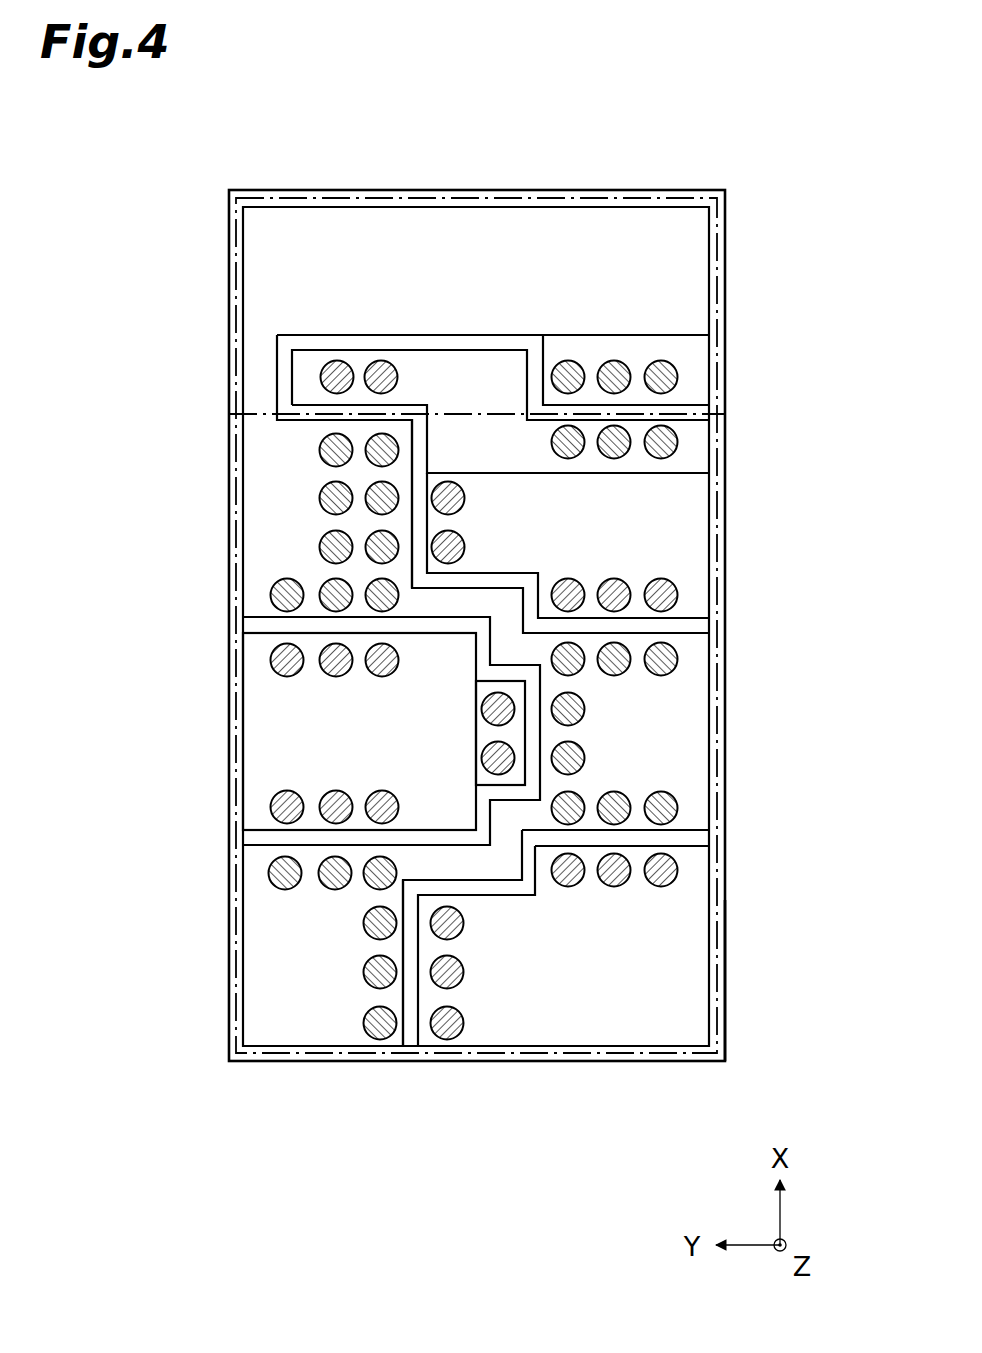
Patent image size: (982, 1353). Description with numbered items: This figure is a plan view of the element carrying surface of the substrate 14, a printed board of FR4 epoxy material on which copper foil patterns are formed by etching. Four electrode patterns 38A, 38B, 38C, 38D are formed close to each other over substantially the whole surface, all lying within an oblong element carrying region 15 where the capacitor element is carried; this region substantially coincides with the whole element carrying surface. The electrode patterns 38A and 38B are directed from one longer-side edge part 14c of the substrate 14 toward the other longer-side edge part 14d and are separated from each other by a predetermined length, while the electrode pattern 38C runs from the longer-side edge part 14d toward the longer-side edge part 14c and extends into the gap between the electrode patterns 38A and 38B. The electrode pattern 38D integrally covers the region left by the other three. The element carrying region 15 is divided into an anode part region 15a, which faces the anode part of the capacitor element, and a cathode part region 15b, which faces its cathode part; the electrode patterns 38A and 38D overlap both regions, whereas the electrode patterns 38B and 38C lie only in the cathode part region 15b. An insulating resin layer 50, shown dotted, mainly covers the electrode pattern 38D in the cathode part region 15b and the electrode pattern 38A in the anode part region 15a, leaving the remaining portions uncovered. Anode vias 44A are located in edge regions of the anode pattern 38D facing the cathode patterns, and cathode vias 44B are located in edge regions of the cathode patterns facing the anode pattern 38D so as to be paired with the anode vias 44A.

The substrate 14 is at (774, 200).
The element carrying region 15 is at (722, 606).
The anode part region 15a is at (718, 325).
The cathode part region 15b is at (718, 790).
The longer-side edge part 14c is at (724, 995).
The longer-side edge part 14d is at (227, 947).
The electrode pattern 38A is at (713, 550).
The electrode pattern 38B is at (708, 918).
The electrode pattern 38C is at (243, 680).
The electrode pattern 38D is at (243, 433).
The anode vias 44A is at (669, 362).
The cathode vias 44B is at (390, 361).
The insulating resin layer 50 is at (702, 449).